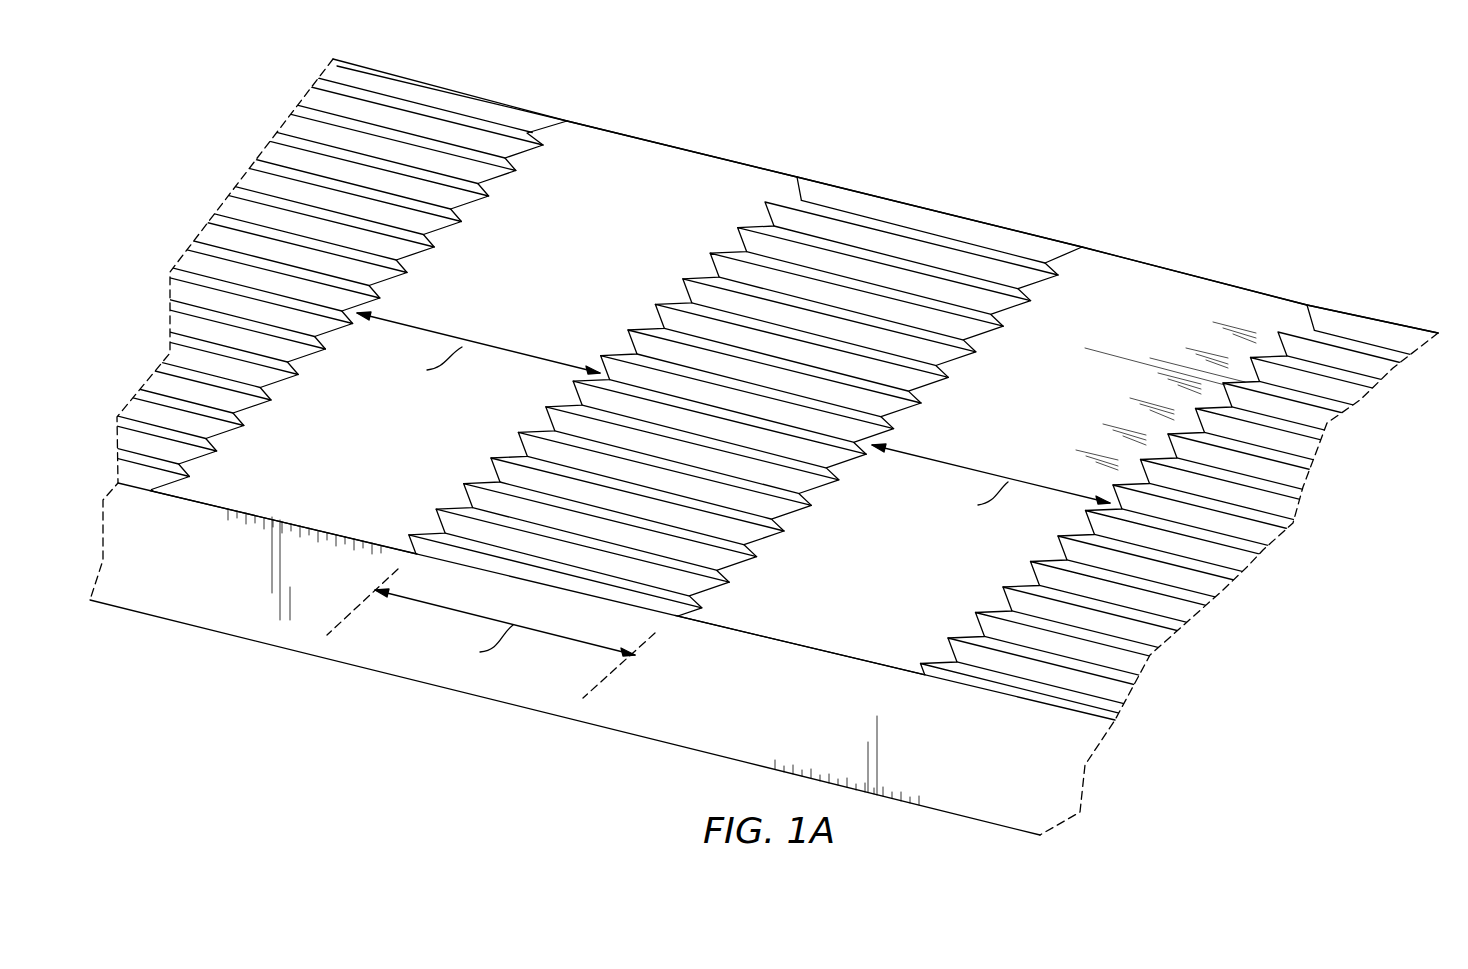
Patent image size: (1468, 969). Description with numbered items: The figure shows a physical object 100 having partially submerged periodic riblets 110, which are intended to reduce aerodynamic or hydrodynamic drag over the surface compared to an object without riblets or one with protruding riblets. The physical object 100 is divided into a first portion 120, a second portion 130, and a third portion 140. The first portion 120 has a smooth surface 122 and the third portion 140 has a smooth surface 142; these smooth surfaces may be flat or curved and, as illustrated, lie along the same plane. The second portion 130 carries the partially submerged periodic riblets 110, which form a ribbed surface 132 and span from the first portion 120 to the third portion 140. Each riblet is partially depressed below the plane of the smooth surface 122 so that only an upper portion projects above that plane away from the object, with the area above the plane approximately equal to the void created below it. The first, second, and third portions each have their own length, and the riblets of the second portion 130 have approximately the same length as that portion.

The physical object 100 is at (1295, 104).
The partially submerged periodic riblets 110 is at (727, 270).
The first portion 120 is at (673, 160).
The smooth surface 122 is at (588, 157).
The second portion 130 is at (938, 260).
The ribbed surface 132 is at (913, 373).
The third portion 140 is at (1183, 297).
The smooth surface 142 is at (822, 630).